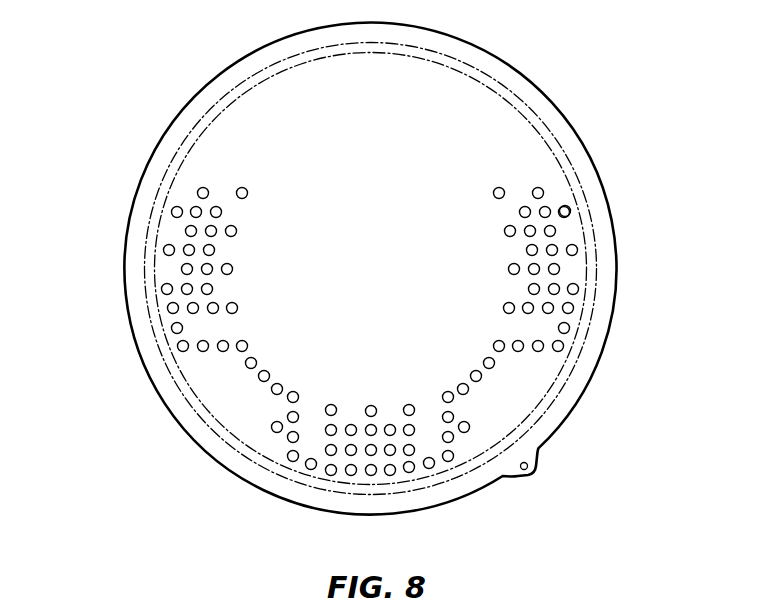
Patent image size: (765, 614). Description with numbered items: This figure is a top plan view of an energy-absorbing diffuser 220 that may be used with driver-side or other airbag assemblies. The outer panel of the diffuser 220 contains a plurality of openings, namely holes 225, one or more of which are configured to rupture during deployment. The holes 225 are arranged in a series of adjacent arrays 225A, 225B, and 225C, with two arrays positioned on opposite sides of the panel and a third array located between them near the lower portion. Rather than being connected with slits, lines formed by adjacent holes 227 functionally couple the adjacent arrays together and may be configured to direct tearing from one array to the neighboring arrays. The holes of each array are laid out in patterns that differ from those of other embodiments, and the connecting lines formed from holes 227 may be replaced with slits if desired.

The diffuser 220 is at (547, 62).
The holes 225 is at (162, 288).
The array 225A is at (573, 232).
The array 225B is at (383, 478).
The array 225C is at (177, 231).
The adjacent holes 227 is at (220, 407).